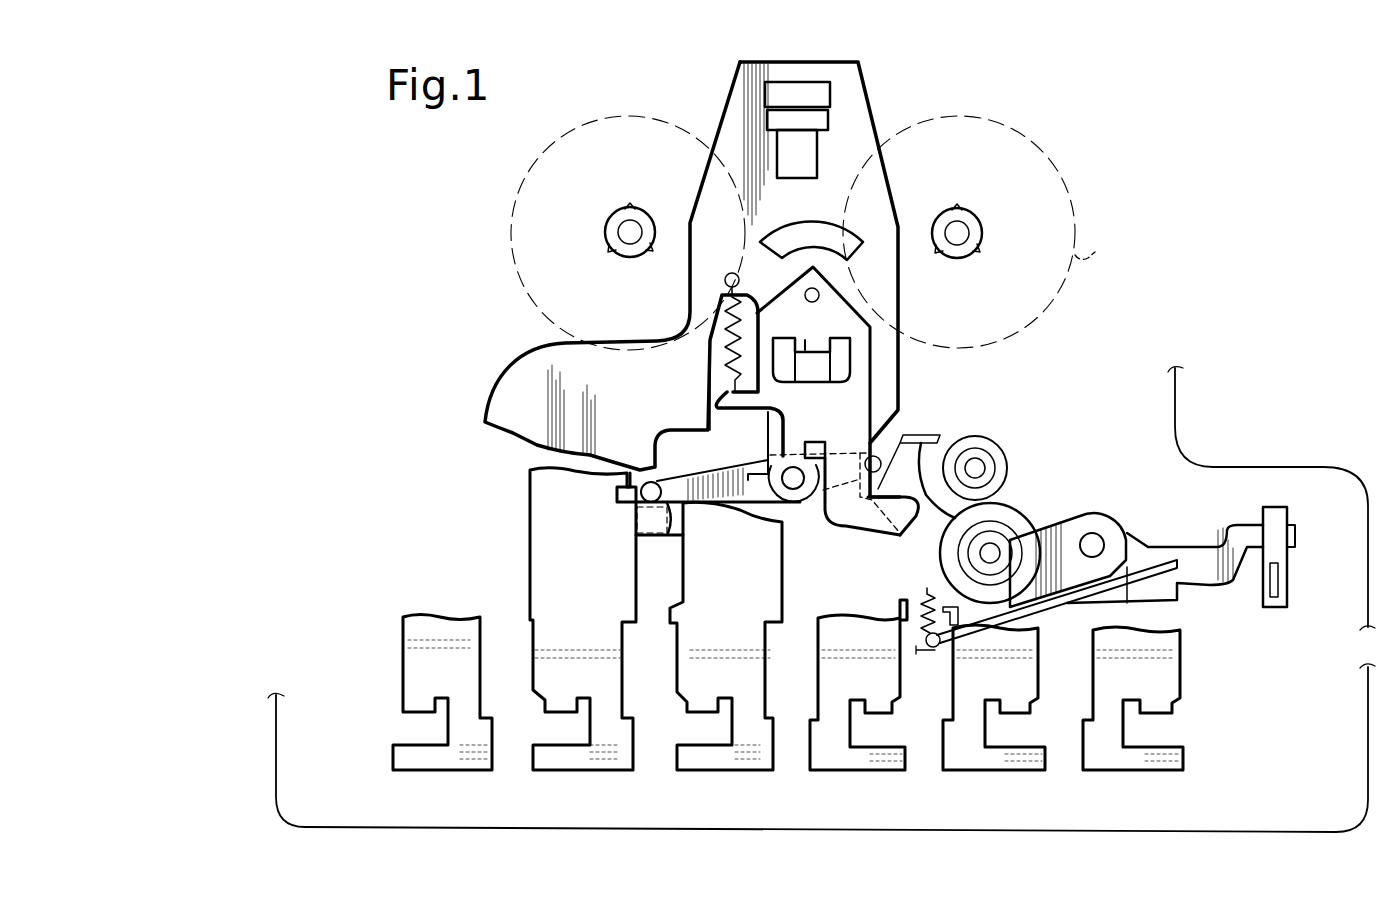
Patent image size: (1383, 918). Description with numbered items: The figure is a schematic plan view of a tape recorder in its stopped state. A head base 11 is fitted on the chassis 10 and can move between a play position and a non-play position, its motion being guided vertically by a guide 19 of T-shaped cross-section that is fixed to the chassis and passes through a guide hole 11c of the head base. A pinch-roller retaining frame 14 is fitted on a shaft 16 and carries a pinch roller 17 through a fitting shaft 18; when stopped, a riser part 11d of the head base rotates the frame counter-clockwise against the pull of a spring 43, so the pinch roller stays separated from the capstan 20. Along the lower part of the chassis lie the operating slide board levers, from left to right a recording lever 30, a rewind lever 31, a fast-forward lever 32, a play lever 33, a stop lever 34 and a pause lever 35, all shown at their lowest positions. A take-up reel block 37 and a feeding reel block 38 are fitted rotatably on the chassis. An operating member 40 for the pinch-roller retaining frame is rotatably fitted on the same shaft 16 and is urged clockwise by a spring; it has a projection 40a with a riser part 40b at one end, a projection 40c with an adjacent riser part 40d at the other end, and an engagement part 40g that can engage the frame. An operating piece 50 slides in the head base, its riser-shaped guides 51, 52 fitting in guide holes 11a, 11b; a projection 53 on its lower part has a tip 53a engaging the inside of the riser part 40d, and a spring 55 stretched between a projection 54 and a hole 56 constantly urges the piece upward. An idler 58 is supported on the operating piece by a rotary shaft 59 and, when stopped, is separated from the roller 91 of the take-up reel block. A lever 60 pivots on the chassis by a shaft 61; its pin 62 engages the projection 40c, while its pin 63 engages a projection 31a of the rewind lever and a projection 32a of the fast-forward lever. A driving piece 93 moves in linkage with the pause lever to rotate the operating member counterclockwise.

The chassis 10 is at (1176, 416).
The head base 11 is at (898, 368).
The guide hole 11a is at (790, 346).
The guide hole 11b is at (815, 450).
The guide hole 11c is at (822, 158).
The riser part 11d is at (958, 616).
The pinch-roller retaining frame 14 is at (1046, 530).
The shaft 16 is at (1098, 540).
The pinch roller 17 is at (1022, 512).
The fitting shaft 18 is at (998, 556).
The guide 19 is at (830, 117).
The capstan 20 is at (982, 464).
The recording lever 30 is at (467, 760).
The rewind (review) lever 31 is at (610, 760).
The projection 31a is at (650, 543).
The fast-forward (cue) lever 32 is at (755, 762).
The projection 32a is at (672, 538).
The play lever 33 is at (885, 765).
The stop lever 34 is at (1020, 763).
The pause lever 35 is at (1152, 765).
The take-up reel block 37 is at (978, 224).
The feeding reel block 38 is at (648, 222).
The operating member 40 is at (1188, 556).
The projection 40a is at (1280, 522).
The riser part 40b is at (1298, 540).
The projection 40c is at (925, 435).
The riser part 40d is at (936, 436).
The engagement part 40g is at (1166, 606).
The spring 43 is at (920, 606).
The operating piece 50 is at (870, 328).
The guide 51 is at (811, 360).
The guide 52 is at (795, 458).
The projection 53 is at (840, 528).
The tip 53a is at (900, 535).
The projection 54 is at (718, 398).
The spring 55 is at (728, 352).
The hole 56 is at (728, 277).
The idler 58 is at (813, 240).
The rotary shaft 59 is at (819, 297).
The lever 60 is at (726, 478).
The shaft 61 is at (792, 490).
The pin 62 is at (875, 455).
The pin 63 is at (616, 500).
The roller 91 is at (1100, 245).
The driving piece 93 is at (1282, 585).